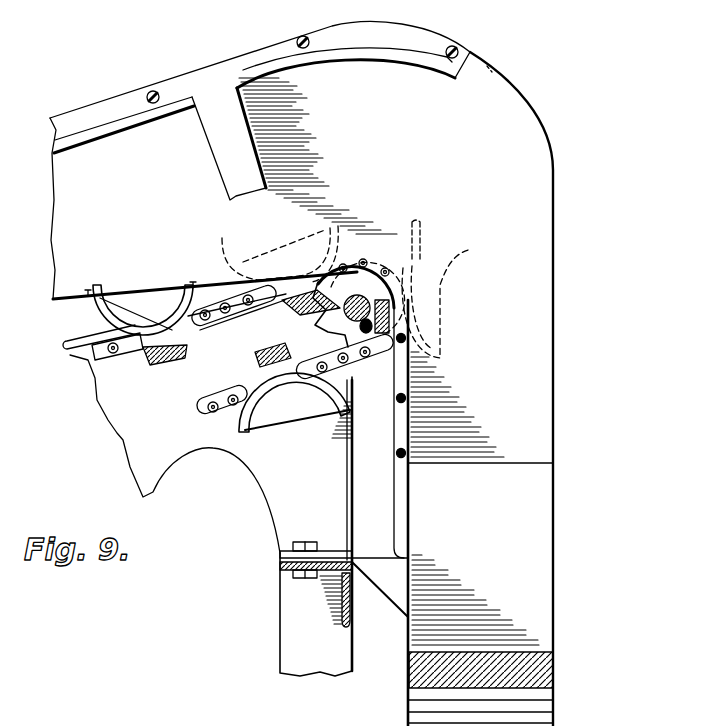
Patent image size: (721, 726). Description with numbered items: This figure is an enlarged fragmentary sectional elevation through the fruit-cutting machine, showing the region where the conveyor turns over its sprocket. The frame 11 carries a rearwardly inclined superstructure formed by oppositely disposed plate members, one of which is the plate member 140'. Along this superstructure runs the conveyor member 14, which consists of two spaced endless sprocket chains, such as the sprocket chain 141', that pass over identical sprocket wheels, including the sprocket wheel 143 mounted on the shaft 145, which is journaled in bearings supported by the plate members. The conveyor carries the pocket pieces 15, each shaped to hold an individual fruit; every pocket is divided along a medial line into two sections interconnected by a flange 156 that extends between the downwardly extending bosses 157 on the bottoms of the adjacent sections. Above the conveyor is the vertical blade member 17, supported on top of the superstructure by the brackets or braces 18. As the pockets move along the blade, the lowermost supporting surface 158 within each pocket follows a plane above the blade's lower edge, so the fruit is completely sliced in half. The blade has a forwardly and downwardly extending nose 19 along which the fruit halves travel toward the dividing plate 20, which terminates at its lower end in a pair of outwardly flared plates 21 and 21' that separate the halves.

The frame 11 is at (276, 612).
The conveyor member 14 is at (93, 323).
The pocket pieces 15 is at (143, 333).
The vertical blade member 17 is at (341, 80).
The brackets or braces 18 is at (230, 140).
The nose 19 is at (530, 248).
The dividing plate 20 is at (537, 493).
The outwardly flared plate 21 is at (507, 704).
The outwardly flared plate 21' is at (509, 656).
The plate member 140' is at (203, 335).
The sprocket chain 141' is at (238, 319).
The sprocket wheel 143 is at (357, 280).
The shaft 145 is at (360, 294).
The flange 156 is at (170, 360).
The bosses 157 is at (140, 347).
The lowermost supporting surface 158 is at (167, 330).